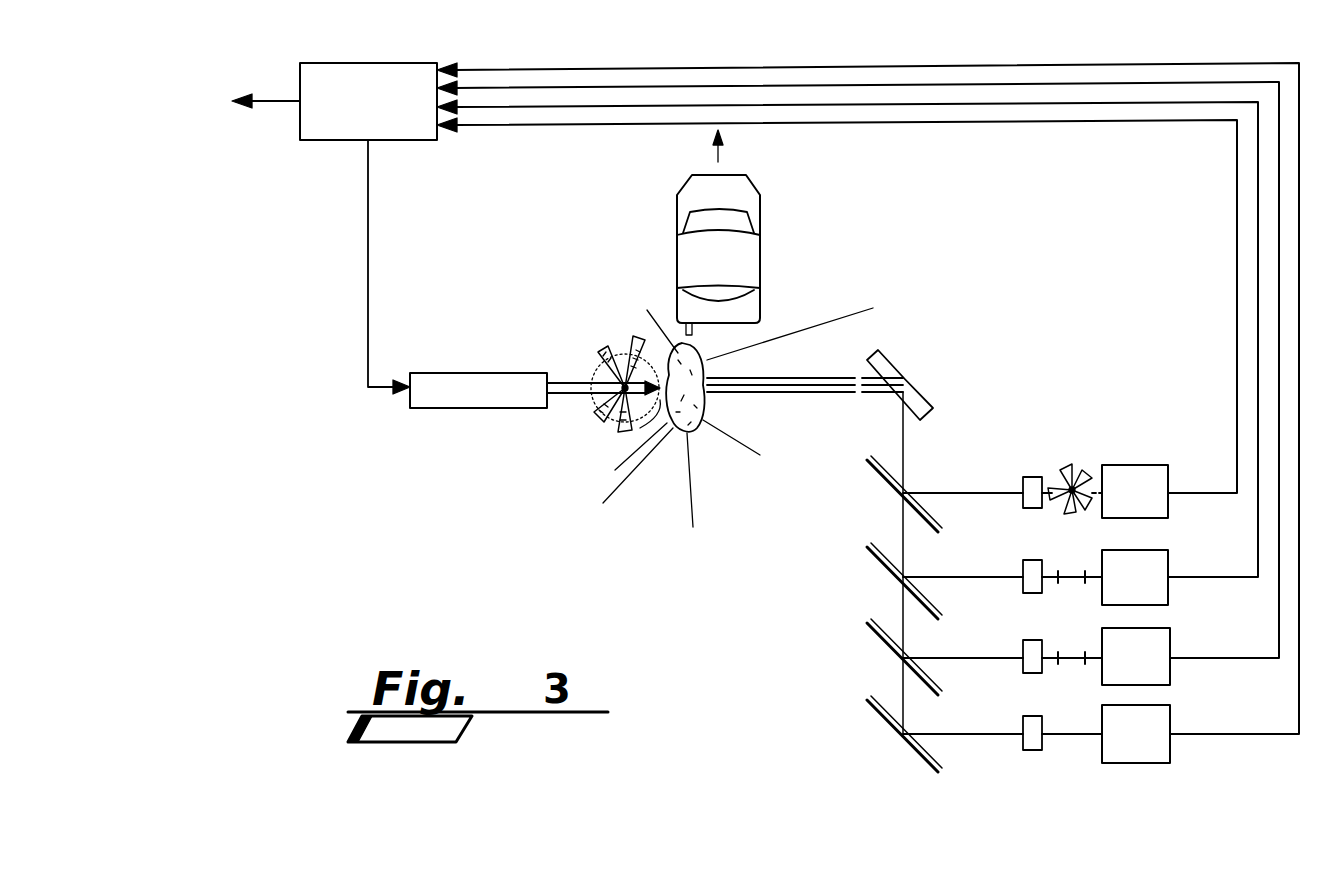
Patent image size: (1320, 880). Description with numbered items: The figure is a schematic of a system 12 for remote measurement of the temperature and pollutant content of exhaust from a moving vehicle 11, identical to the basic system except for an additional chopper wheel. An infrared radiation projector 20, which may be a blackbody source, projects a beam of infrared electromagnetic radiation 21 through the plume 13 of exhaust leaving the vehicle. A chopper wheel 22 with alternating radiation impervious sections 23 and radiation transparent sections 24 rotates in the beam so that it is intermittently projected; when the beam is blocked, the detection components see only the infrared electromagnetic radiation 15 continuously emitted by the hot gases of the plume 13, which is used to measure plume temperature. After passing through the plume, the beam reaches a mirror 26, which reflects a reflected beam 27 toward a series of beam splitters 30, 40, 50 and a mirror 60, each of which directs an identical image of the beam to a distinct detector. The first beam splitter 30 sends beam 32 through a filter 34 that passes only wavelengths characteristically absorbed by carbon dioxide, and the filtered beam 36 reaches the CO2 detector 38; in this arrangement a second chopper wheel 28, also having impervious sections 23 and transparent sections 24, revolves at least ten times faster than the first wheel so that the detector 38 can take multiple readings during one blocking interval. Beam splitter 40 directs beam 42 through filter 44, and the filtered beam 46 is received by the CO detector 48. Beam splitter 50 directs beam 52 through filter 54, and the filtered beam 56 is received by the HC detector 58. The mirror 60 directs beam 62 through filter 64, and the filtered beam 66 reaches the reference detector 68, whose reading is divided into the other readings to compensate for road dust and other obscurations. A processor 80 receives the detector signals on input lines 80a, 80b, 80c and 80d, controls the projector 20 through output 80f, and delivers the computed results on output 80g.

The moving vehicle 11 is at (762, 207).
The system 12 is at (1005, 252).
The plume of vehicle exhaust 13 is at (712, 363).
The emitted infrared electromagnetic radiation 15 is at (663, 290).
The infrared radiation projector 20 is at (470, 373).
The beam of infrared electromagnetic radiation 21 is at (592, 368).
The chopper wheel 22 is at (643, 327).
The radiation impervious sections 23 is at (1062, 470).
The radiation transparent sections 24 is at (640, 428).
The mirror 26 is at (895, 357).
The reflected beam 27 is at (907, 445).
The second chopper wheel 28 is at (1088, 462).
The first beam splitter 30 is at (867, 462).
The beam 32 is at (965, 493).
The filter 34 is at (1023, 505).
The filtered beam 36 is at (1053, 480).
The CO2 detector 38 is at (1168, 466).
The beam splitter 40 is at (867, 548).
The beam 42 is at (948, 577).
The filter 44 is at (1023, 587).
The filtered beam 46 is at (1070, 583).
The CO detector 48 is at (1170, 551).
The beam splitter 50 is at (885, 648).
The beam 52 is at (948, 658).
The filter 54 is at (1020, 666).
The filtered beam 56 is at (1073, 660).
The HC detector 58 is at (1170, 686).
The mirror 60 is at (873, 710).
The beam 62 is at (970, 735).
The filter 64 is at (1020, 745).
The filtered beam 66 is at (1075, 735).
The reference detector 68 is at (1170, 710).
The processor 80 is at (387, 115).
The input 80a is at (478, 126).
The input 80b is at (520, 107).
The input 80c is at (555, 88).
The input 80d is at (483, 70).
The output 80f is at (368, 218).
The output 80g is at (246, 82).